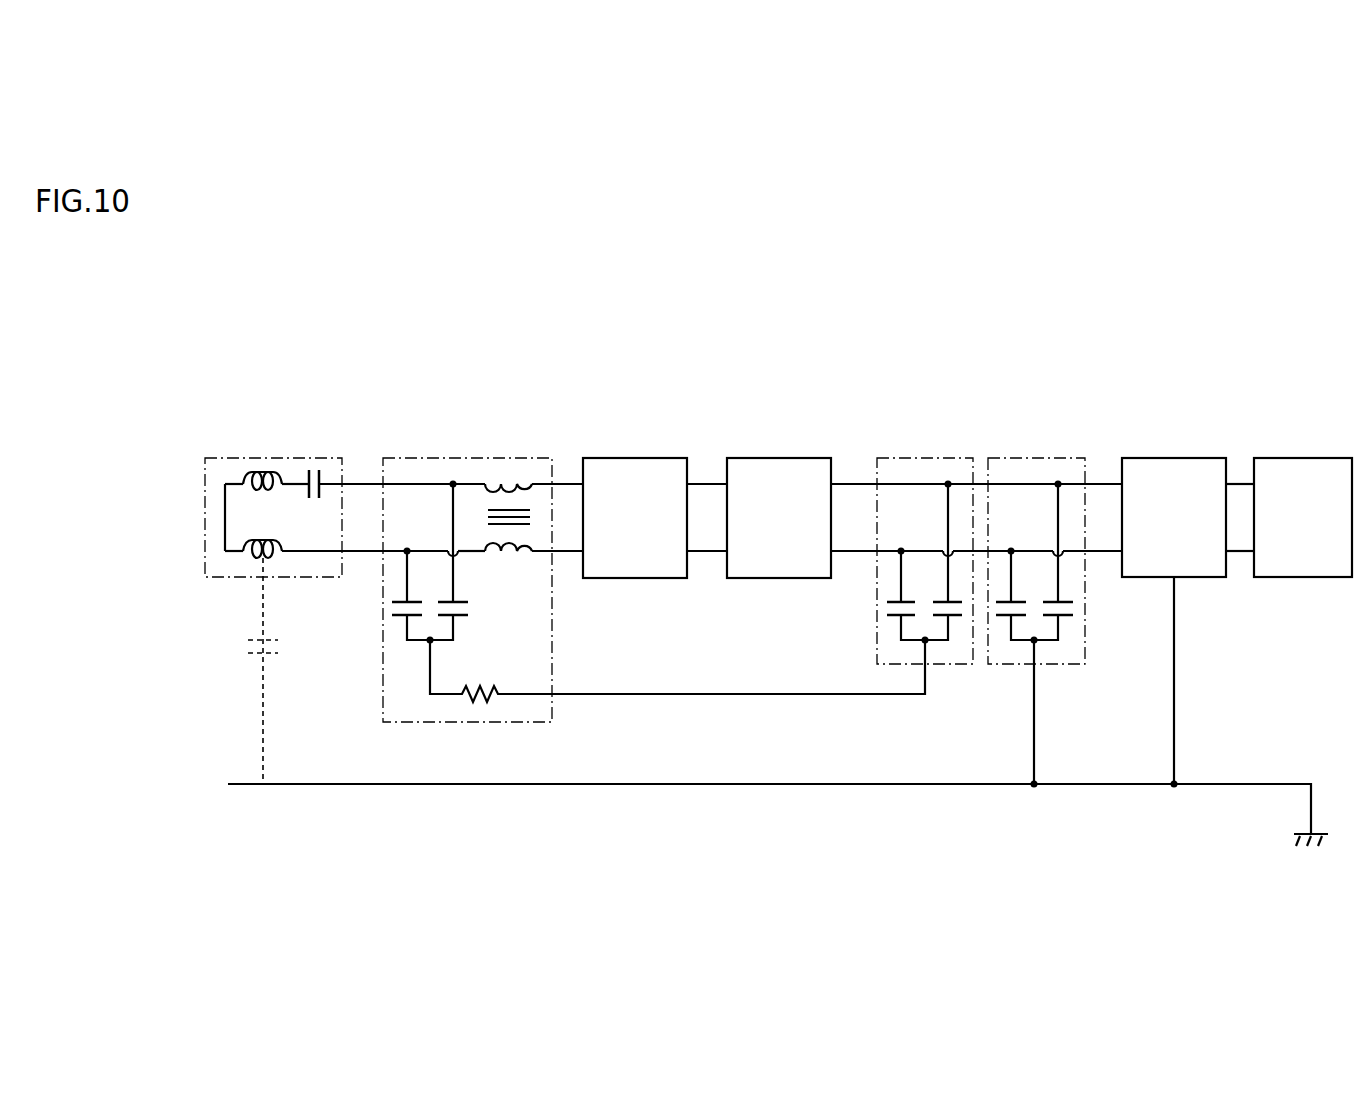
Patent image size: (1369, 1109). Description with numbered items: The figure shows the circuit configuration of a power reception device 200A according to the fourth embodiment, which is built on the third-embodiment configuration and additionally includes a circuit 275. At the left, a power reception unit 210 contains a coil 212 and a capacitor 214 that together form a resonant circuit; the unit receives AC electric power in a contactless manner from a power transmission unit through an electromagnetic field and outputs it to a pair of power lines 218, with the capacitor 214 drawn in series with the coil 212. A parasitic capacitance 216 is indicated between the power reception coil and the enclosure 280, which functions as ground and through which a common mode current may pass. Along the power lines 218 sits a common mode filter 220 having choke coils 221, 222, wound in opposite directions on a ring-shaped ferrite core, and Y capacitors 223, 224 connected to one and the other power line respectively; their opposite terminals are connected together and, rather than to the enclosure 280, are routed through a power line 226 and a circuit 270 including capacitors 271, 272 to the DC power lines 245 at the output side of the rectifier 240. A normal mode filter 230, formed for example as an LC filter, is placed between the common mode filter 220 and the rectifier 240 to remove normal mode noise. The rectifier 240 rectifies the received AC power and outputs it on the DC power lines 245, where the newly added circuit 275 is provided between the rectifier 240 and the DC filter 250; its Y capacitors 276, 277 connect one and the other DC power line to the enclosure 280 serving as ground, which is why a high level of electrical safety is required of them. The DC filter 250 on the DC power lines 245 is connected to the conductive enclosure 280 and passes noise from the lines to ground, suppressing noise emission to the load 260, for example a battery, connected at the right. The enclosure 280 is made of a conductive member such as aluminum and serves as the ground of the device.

The power reception device 200A is at (263, 359).
The power reception unit 210 is at (212, 458).
The coil 212 is at (263, 470).
The capacitor 214 is at (312, 468).
The parasitic capacitance 216 is at (258, 655).
The power lines 218 is at (350, 554).
The common mode filter 220 is at (433, 458).
The choke coil 221 is at (510, 480).
The choke coil 222 is at (507, 554).
The Y capacitor 223 is at (395, 617).
The Y capacitor 224 is at (466, 617).
The power line 226 is at (693, 696).
The normal mode filter 230 is at (631, 458).
The rectifier 240 is at (773, 458).
The DC power lines 245 is at (842, 557).
The DC filter 250 is at (1170, 458).
The load 260 is at (1305, 458).
The circuit 270 is at (923, 458).
The capacitor 271 is at (886, 609).
The capacitor 272 is at (960, 618).
The circuit 275 is at (1031, 458).
The Y capacitor 276 is at (998, 618).
The Y capacitor 277 is at (1075, 609).
The enclosure 280 is at (667, 786).